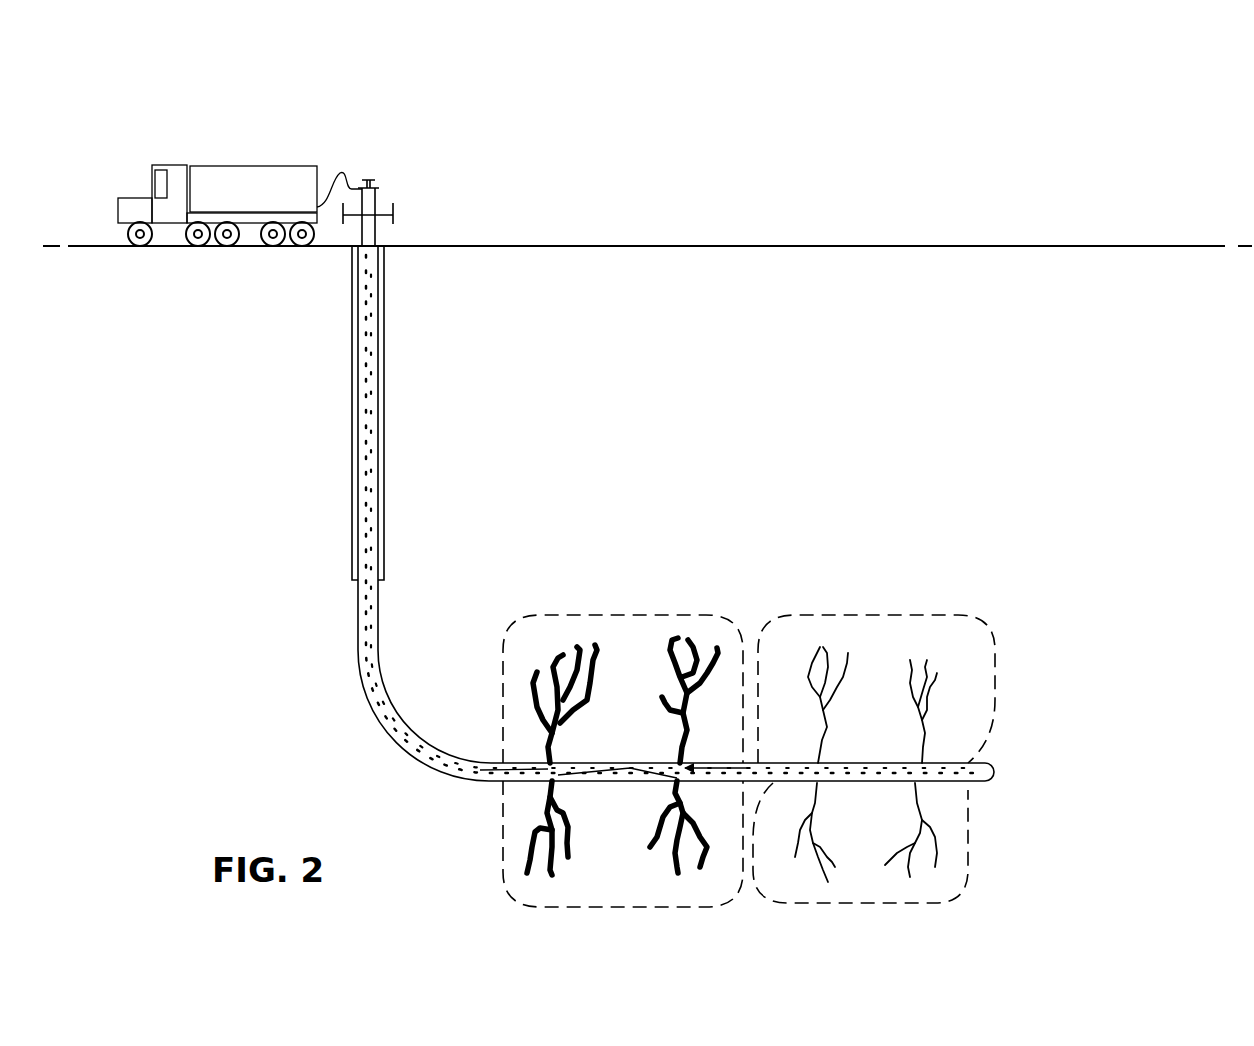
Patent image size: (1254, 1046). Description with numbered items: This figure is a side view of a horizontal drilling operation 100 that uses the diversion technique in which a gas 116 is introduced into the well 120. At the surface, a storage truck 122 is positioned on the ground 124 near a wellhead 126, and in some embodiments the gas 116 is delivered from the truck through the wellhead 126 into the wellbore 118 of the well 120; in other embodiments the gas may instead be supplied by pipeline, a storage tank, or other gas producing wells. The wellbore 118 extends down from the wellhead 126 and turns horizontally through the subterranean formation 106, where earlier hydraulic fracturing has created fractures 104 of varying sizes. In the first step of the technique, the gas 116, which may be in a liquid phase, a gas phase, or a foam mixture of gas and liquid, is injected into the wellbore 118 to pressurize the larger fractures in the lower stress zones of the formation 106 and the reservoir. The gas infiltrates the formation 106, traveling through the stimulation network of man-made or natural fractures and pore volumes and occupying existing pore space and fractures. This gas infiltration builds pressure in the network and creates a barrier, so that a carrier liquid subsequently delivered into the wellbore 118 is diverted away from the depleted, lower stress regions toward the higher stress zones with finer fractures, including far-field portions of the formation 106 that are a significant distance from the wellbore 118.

The horizontal drilling operation 100 is at (902, 158).
The fractures 104 is at (698, 582).
The subterranean formation 106 is at (920, 452).
The gas 116 is at (385, 707).
The wellbore 118 is at (430, 762).
The well 120 is at (326, 436).
The storage truck 122 is at (271, 199).
The ground 124 is at (576, 246).
The wellhead 126 is at (403, 190).